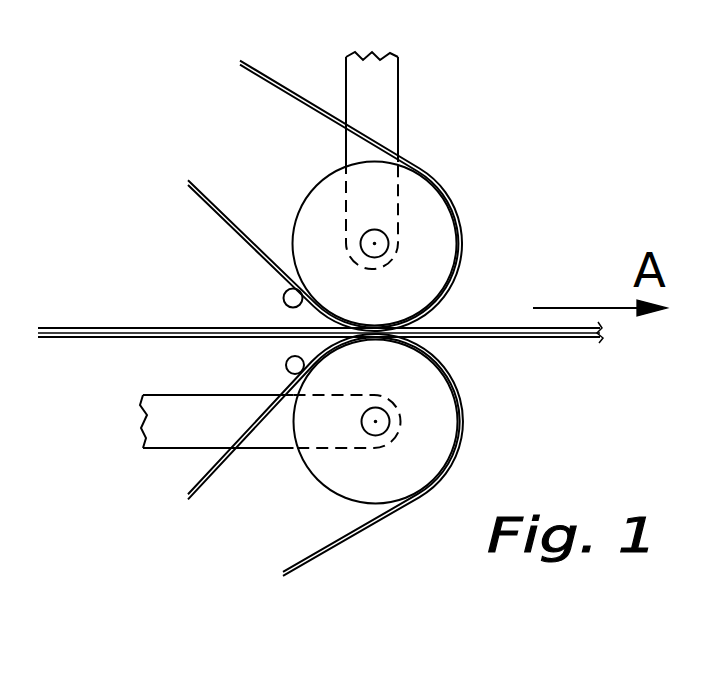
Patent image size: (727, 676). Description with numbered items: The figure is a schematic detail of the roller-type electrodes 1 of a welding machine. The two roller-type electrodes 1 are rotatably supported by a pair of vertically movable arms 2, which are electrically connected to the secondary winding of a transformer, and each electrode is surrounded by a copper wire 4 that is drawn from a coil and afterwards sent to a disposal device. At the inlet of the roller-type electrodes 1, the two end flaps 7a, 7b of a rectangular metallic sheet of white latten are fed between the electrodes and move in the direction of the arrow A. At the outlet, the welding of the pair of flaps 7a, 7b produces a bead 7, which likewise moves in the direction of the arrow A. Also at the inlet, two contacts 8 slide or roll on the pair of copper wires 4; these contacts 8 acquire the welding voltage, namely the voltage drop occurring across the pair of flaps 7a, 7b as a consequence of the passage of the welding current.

The roller-type electrodes 1 is at (542, 112).
The vertically movable arms 2 is at (383, 83).
The copper wire 4 is at (277, 88).
The bead 7 is at (320, 335).
The end flap 7a is at (77, 332).
The end flap 7b is at (77, 332).
The contacts 8 is at (284, 294).